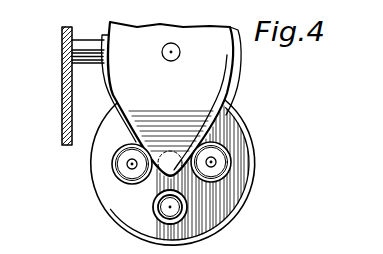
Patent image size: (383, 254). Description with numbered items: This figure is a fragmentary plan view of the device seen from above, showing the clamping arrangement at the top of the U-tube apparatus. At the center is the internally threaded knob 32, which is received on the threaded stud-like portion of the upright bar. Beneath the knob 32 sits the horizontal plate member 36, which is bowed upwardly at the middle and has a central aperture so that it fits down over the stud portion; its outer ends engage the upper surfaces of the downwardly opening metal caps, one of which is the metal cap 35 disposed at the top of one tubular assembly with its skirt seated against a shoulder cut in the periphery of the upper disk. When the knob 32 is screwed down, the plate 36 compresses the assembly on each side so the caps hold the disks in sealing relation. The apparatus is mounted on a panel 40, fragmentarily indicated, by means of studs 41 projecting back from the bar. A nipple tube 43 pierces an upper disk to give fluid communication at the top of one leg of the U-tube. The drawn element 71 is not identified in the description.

The knob 32 is at (217, 73).
The metal cap 35 is at (240, 160).
The horizontal plate member 36 is at (228, 113).
The panel 40 is at (62, 31).
The studs 41 is at (88, 58).
The nipple tube 43 is at (180, 216).
The pulleys 71 is at (183, 198).